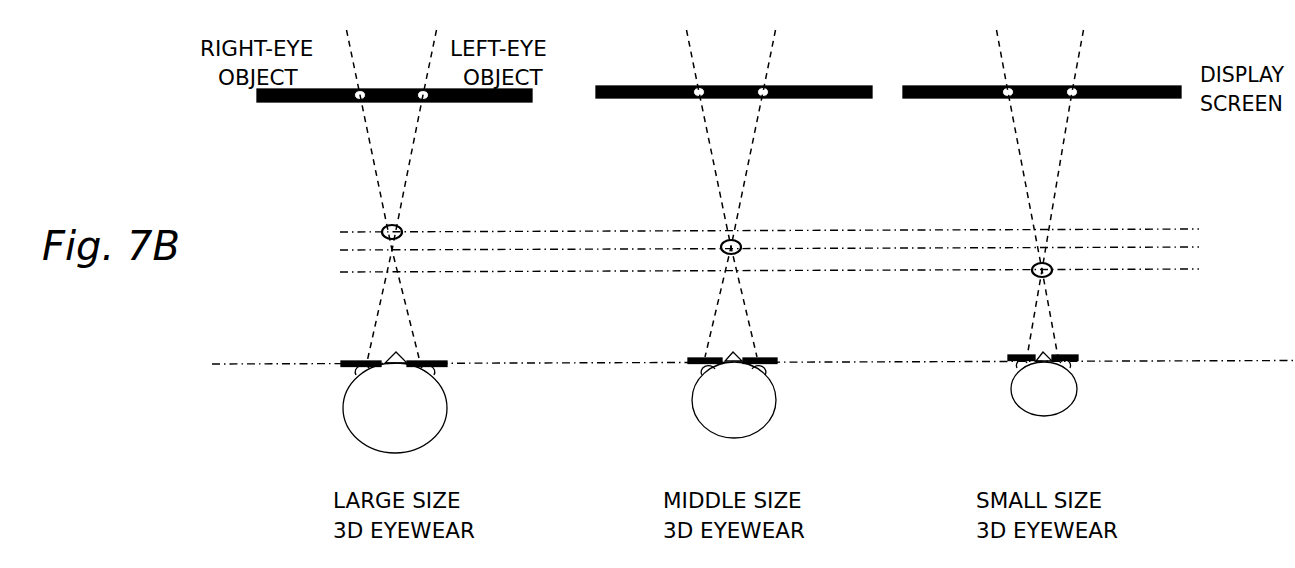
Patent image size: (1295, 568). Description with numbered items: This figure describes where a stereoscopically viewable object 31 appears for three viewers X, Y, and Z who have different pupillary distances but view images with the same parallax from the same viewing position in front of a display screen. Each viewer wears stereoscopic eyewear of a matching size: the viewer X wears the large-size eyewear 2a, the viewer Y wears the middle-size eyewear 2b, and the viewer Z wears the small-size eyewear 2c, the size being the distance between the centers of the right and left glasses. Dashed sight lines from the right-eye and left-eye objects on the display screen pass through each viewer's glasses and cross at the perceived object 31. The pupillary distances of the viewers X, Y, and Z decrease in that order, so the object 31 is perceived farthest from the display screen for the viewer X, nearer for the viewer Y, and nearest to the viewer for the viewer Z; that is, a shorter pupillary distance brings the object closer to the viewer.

The object 31 is at (383, 226).
The 3D eyewear having large size 2a is at (343, 362).
The 3D eyewear having middle size 2b is at (700, 361).
The 3D eyewear having small size 2c is at (1010, 357).
The viewer X is at (447, 410).
The viewer Y is at (772, 413).
The viewer Z is at (1073, 398).